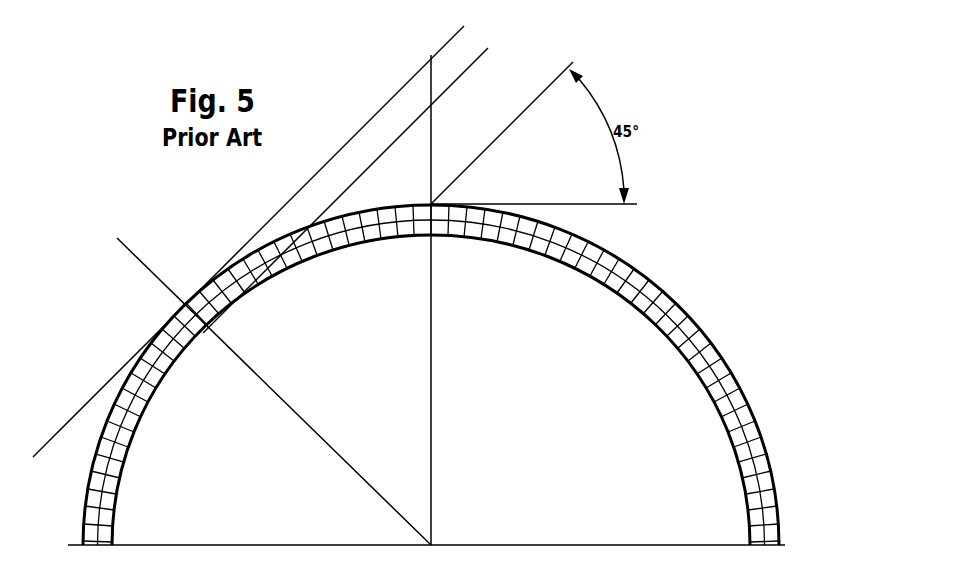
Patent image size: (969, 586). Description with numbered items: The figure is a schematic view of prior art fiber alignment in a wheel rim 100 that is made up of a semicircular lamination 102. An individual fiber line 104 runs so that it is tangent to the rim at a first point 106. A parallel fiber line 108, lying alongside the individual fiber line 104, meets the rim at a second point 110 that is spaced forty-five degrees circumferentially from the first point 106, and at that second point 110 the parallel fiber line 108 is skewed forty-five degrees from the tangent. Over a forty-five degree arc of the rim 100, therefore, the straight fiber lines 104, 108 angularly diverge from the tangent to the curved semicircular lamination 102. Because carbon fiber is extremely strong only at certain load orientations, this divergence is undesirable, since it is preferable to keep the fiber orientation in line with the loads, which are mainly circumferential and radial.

The rim 100 is at (139, 422).
The semicircular lamination 102 is at (176, 360).
The individual fiber line 104 is at (404, 131).
The first point 106 is at (183, 305).
The parallel fiber line 108 is at (512, 122).
The second point 110 is at (431, 204).